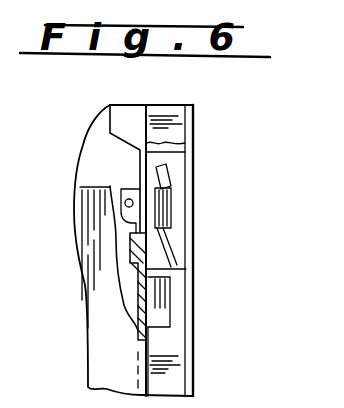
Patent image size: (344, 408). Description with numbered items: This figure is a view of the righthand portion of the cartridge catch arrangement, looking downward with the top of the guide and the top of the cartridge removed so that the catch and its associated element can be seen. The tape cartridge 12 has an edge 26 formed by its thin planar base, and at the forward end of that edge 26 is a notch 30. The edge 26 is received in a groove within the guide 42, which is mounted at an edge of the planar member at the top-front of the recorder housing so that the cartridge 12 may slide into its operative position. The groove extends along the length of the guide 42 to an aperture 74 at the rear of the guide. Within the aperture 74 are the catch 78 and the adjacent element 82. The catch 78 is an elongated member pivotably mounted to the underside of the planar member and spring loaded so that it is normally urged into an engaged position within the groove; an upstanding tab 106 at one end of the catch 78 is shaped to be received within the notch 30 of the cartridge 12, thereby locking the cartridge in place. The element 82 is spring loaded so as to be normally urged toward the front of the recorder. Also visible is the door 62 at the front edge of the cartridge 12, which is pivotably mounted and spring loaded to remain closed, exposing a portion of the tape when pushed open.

The tape cartridge 12 is at (77, 233).
The door 62 is at (110, 133).
The aperture 74 is at (177, 296).
The element 82 is at (171, 177).
The notch 30 is at (168, 228).
The upstanding tab 106 is at (173, 266).
The catch 78 is at (157, 270).
The edge 26 is at (165, 308).
The guide 42 is at (175, 347).